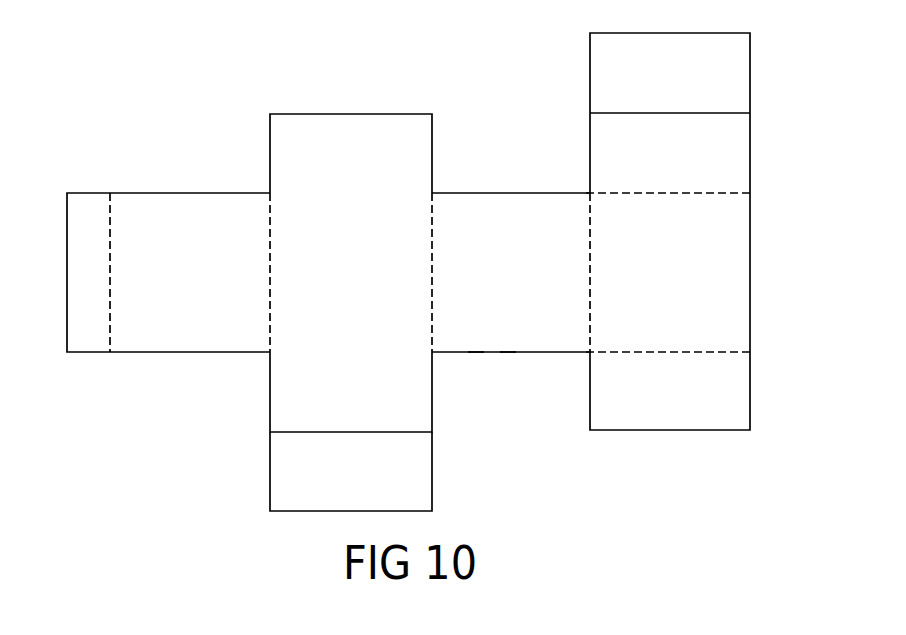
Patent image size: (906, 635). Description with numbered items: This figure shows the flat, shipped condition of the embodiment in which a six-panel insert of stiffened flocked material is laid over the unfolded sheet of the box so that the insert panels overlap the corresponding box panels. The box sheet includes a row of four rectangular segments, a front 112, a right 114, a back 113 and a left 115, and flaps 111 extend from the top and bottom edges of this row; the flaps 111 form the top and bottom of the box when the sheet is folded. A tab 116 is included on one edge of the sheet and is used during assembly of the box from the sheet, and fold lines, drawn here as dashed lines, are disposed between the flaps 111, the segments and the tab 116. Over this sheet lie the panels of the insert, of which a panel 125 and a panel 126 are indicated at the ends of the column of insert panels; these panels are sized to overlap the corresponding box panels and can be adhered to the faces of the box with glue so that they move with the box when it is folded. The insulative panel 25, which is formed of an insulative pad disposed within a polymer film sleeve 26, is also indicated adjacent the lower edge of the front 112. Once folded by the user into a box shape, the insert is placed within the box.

The flaps 111 is at (330, 166).
The front segment 112 is at (490, 285).
The back segment 113 is at (171, 285).
The right segment 114 is at (650, 285).
The left segment 115 is at (330, 285).
The tab 116 is at (88, 215).
The panel 125 is at (650, 85).
The panel 126 is at (330, 484).
The insulative panel 25 is at (508, 342).
The polymer film sleeve 26 is at (476, 342).